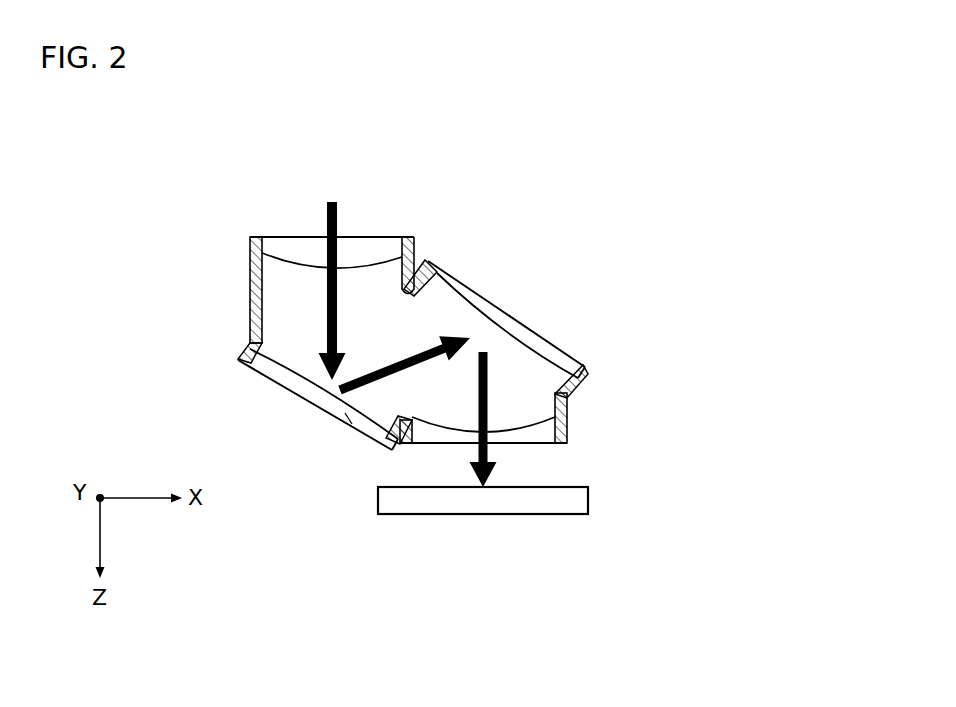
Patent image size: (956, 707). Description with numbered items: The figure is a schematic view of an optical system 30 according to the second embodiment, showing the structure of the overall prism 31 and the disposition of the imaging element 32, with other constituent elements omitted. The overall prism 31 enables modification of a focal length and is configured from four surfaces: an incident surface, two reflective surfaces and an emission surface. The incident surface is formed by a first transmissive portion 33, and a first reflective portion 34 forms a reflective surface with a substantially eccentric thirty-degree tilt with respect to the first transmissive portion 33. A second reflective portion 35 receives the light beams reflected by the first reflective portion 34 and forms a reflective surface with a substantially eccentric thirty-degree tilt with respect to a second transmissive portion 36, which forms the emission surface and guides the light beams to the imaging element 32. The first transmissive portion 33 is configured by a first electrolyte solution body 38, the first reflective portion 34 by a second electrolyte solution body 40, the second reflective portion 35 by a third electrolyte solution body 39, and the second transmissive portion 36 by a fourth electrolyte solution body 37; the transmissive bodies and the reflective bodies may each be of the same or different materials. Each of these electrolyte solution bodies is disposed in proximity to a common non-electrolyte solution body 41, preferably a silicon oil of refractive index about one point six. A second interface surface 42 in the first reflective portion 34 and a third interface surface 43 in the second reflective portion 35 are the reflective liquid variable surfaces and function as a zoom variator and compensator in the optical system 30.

The optical system 30 is at (503, 138).
The overall prism 31 is at (477, 222).
The imaging element 32 is at (535, 514).
The first transmissive portion 33 is at (253, 218).
The first reflective portion 34 is at (233, 370).
The second reflective portion 35 is at (600, 368).
The second transmissive portion 36 is at (590, 443).
The fourth electrolyte solution body 37 is at (533, 437).
The first electrolyte solution body 38 is at (292, 247).
The third electrolyte solution body 39 is at (455, 292).
The second electrolyte solution body 40 is at (295, 397).
The non-electrolyte solution body 41 is at (512, 395).
The second interface surface 42 is at (347, 415).
The third interface surface 43 is at (490, 330).